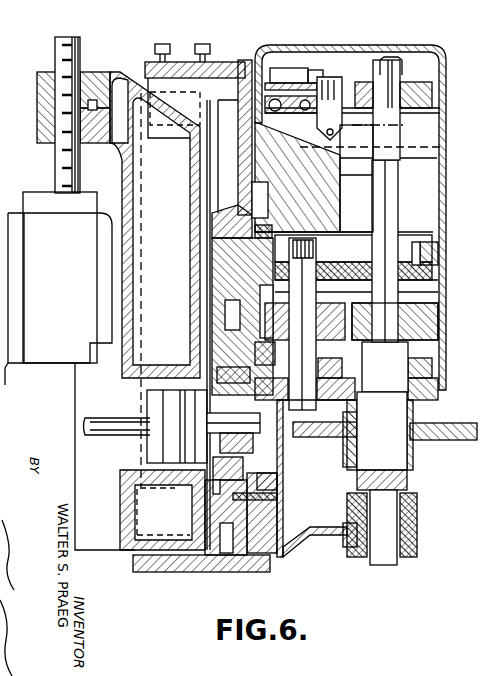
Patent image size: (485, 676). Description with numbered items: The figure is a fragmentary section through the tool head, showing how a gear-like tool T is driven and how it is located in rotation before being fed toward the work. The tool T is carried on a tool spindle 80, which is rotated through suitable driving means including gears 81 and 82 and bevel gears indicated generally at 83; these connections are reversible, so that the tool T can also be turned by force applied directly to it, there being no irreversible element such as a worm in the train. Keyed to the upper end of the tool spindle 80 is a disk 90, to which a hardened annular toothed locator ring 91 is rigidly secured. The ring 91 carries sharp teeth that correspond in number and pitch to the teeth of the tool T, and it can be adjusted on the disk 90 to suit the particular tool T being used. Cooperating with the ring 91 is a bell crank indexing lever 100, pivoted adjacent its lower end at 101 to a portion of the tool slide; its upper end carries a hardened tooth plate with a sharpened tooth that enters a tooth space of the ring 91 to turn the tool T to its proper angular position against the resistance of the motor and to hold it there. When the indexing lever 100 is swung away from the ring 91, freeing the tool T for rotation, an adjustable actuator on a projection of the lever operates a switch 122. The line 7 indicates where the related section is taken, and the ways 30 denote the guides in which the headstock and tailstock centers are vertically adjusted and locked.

The switch 122 is at (294, 63).
The ways 30 is at (360, 46).
The locator ring 91 is at (415, 75).
The disk 90 is at (437, 114).
The section line 7- 7 is at (348, 76).
The indexing lever 100 is at (343, 118).
The pivot 101 is at (340, 147).
The gear 82 is at (333, 305).
The gear 81 is at (415, 325).
The tool spindle 80 is at (412, 453).
The bevel gears 83 is at (321, 392).
The tool T is at (460, 440).